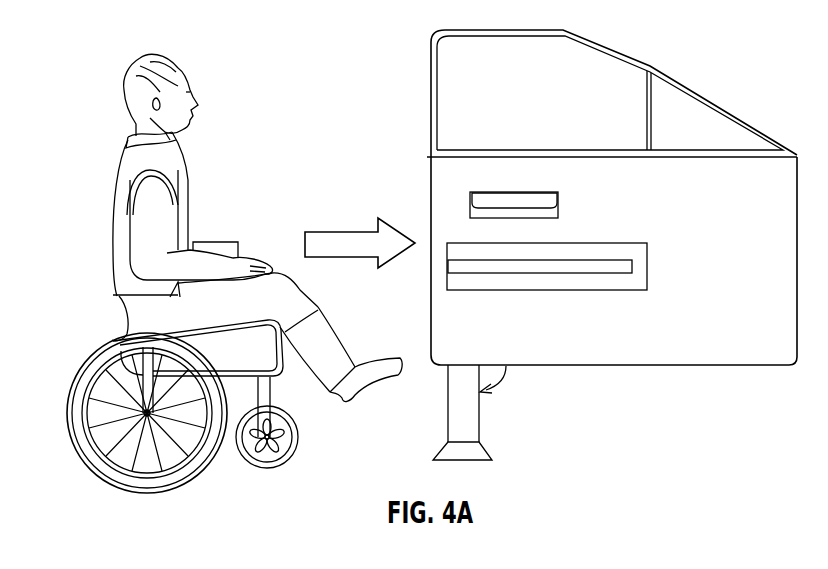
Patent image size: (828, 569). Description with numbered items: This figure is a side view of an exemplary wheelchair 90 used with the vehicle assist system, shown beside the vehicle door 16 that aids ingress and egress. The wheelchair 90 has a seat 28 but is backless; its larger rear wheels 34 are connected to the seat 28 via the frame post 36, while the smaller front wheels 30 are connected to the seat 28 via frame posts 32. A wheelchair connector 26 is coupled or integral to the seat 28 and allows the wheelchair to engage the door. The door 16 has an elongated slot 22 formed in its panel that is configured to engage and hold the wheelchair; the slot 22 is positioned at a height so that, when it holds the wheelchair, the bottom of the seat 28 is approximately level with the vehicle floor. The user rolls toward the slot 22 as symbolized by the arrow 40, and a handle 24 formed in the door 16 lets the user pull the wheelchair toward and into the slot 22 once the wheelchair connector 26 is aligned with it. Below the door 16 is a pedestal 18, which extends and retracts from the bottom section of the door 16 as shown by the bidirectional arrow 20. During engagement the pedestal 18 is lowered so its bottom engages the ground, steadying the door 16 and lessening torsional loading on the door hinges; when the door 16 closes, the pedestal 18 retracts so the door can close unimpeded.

The door 16 is at (708, 101).
The pedestal 18 is at (467, 422).
The bidirectional arrow 20 is at (505, 383).
The elongated slot 22 is at (603, 243).
The handle 24 is at (525, 192).
The wheelchair connector 26 is at (215, 242).
The seat 28 is at (306, 313).
The front wheels 30 is at (268, 468).
The frame posts 32 is at (272, 393).
The rear wheels 34 is at (93, 353).
The frame post 36 is at (82, 430).
The arrow 40 is at (342, 230).
The wheelchair 90 is at (104, 313).